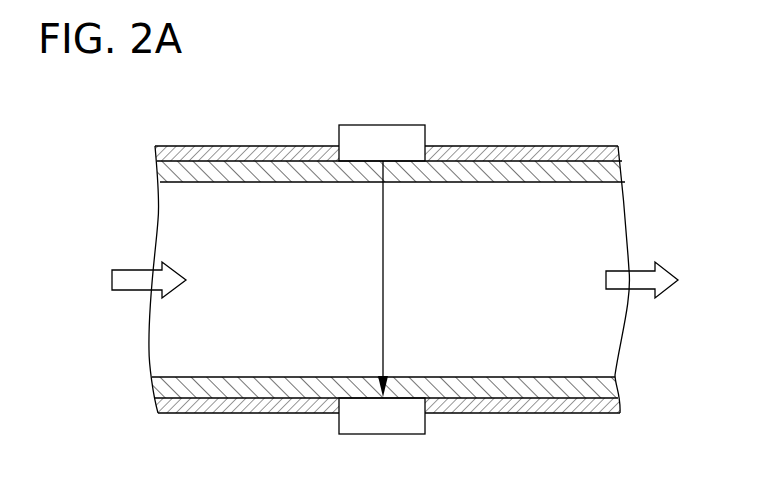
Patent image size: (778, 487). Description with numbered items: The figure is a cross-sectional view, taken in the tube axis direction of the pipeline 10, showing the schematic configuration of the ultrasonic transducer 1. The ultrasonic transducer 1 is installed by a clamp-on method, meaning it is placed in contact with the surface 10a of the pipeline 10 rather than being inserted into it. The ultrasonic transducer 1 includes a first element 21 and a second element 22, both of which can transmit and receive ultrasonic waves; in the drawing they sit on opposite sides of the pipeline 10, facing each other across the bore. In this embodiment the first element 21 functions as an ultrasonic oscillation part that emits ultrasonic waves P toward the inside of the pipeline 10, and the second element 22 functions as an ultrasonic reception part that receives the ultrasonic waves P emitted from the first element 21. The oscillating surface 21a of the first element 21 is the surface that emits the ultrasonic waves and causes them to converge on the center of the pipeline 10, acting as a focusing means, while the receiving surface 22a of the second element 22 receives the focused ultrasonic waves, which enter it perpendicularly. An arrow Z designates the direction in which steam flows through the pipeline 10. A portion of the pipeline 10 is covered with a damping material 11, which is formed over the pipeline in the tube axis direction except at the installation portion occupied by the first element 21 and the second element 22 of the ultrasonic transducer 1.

The ultrasonic transducer 1 is at (420, 88).
The pipeline 10 is at (205, 172).
The surface of the pipeline 10a is at (526, 158).
The damping material 11 is at (580, 152).
The first element 21 is at (354, 137).
The oscillating surface 21a is at (410, 165).
The second element 22 is at (355, 423).
The receiving surface 22a is at (410, 396).
The ultrasonic waves P is at (385, 272).
The direction in which steam flows Z is at (643, 271).